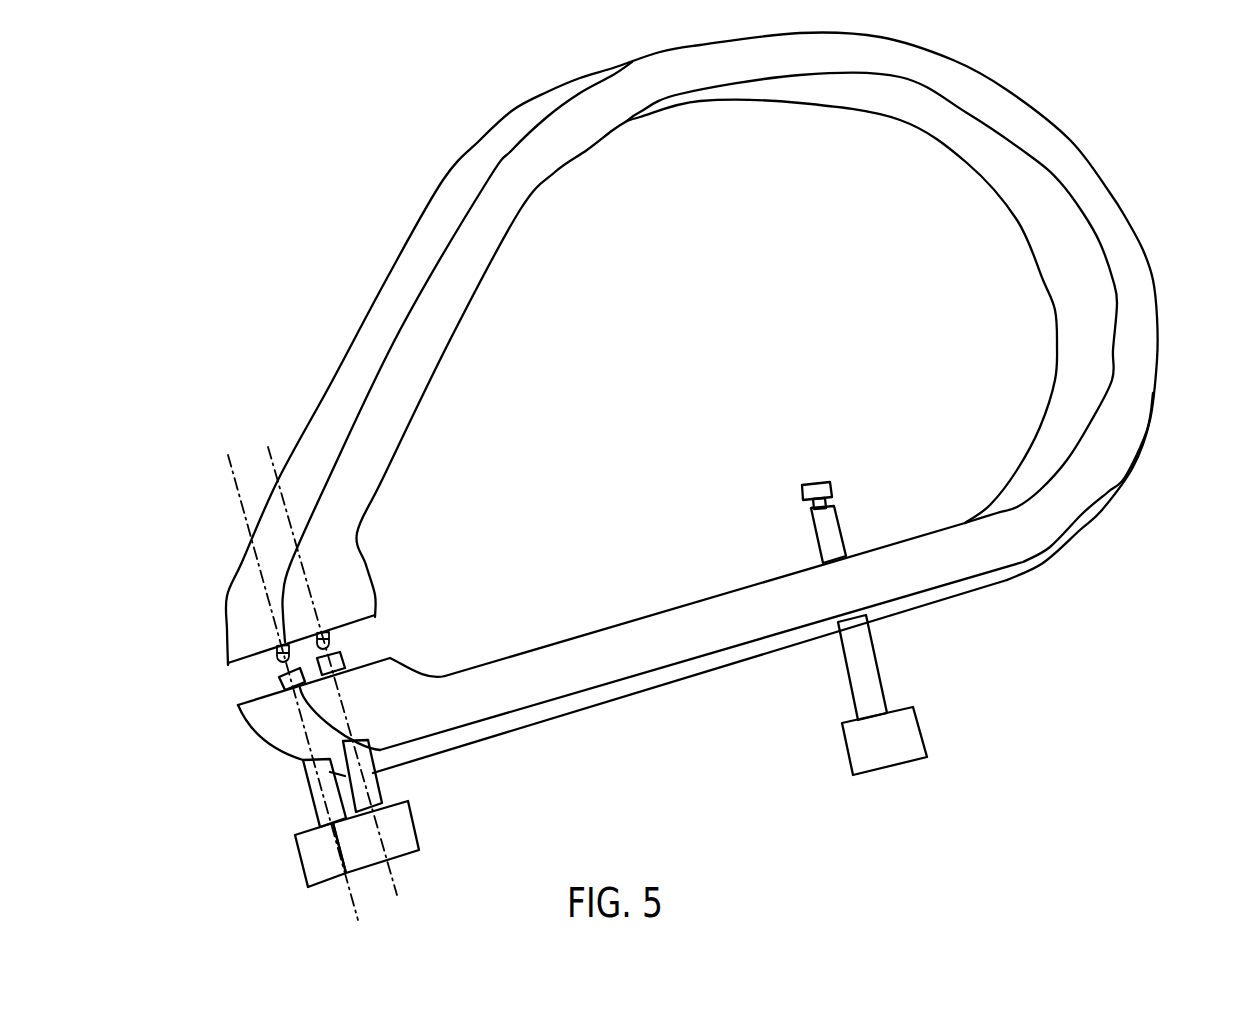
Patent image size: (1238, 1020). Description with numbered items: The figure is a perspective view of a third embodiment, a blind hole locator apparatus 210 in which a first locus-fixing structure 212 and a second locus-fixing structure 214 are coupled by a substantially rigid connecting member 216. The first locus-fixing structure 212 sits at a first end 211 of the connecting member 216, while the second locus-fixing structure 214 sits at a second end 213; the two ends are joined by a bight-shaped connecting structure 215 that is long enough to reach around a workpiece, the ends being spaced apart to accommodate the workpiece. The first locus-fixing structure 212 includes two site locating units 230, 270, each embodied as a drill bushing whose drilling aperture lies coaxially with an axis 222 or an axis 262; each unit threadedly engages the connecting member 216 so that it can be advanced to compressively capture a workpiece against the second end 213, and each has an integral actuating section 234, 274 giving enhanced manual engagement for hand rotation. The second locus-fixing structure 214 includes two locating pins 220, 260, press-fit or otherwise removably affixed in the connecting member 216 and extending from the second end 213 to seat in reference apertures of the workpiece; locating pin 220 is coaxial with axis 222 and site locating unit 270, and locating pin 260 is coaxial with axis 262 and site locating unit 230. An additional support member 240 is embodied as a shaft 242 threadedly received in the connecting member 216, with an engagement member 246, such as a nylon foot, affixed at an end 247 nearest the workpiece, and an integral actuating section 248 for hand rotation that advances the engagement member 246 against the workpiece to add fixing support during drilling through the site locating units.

The blind hole locator apparatus 210 is at (1160, 649).
The first end 211 is at (268, 740).
The first locus-fixing structure 212 is at (302, 690).
The second end 213 is at (226, 631).
The second locus-fixing structure 214 is at (364, 366).
The bight-shaped connecting structure 215 is at (1160, 282).
The connecting member 216 is at (650, 683).
The locating pin 220 is at (280, 664).
The axis 222 is at (362, 916).
The site locating unit 230 is at (380, 783).
The integral actuating section 234 is at (416, 822).
The support member 240 is at (876, 644).
The shaft 242 is at (878, 650).
The engagement member 246 is at (838, 490).
The end 247 is at (810, 510).
The integral actuating section 248 is at (928, 731).
The locating pin 260 is at (331, 642).
The axis 262 is at (399, 905).
The site locating unit 270 is at (312, 796).
The integral actuating section 274 is at (306, 863).